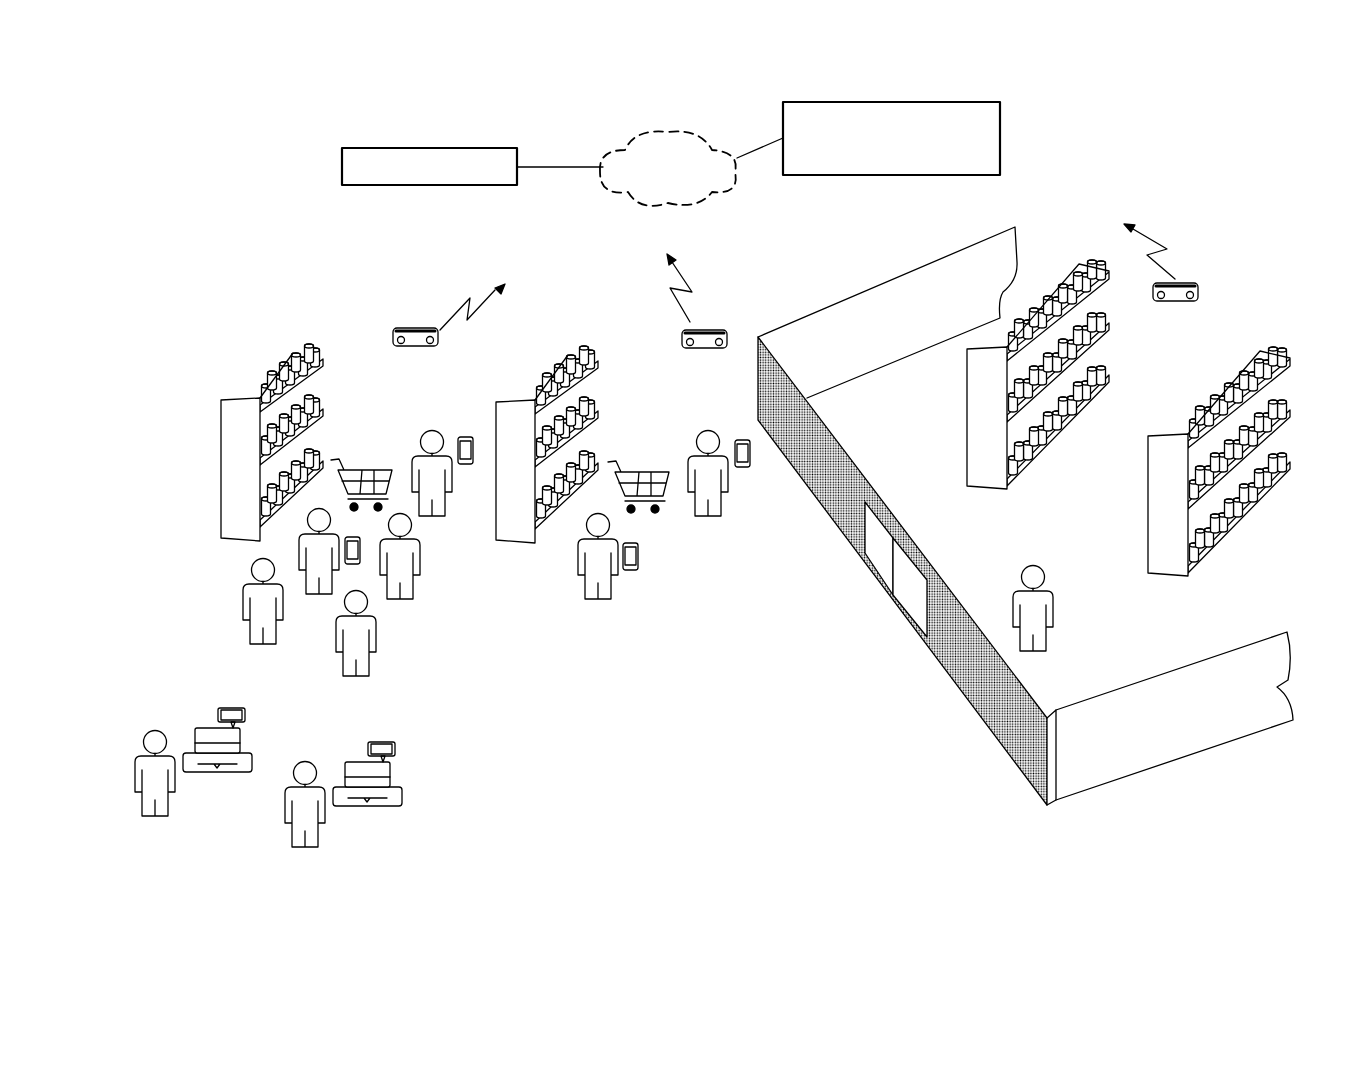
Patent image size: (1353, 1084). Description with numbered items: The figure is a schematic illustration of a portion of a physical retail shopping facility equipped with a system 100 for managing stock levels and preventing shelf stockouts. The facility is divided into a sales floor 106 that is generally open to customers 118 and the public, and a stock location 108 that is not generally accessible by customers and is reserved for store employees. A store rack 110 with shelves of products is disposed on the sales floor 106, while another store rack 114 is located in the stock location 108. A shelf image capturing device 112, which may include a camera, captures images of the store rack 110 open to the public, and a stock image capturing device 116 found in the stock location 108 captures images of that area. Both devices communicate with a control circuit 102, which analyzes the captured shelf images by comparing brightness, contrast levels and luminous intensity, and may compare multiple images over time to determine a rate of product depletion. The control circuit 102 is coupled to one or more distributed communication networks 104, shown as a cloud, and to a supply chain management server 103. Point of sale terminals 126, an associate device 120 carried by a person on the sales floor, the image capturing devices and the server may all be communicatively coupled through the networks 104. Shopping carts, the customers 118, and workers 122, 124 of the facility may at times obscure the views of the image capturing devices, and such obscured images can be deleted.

The system 100 is at (1158, 160).
The control circuit 102 is at (378, 185).
The supply chain management server 103 is at (792, 177).
The distributed communication network 104 is at (684, 180).
The sales floor 106 is at (564, 713).
The stock location 108 is at (1120, 755).
The store rack 110 is at (220, 505).
The shelf image capturing device 112 is at (417, 347).
The store rack 114 is at (980, 488).
The stock image capturing device 116 is at (1177, 302).
The customers 118 is at (413, 593).
The associate device 120 is at (632, 572).
The worker 122 is at (1035, 650).
The worker 124 is at (147, 812).
The point of sale terminal 126 is at (240, 740).